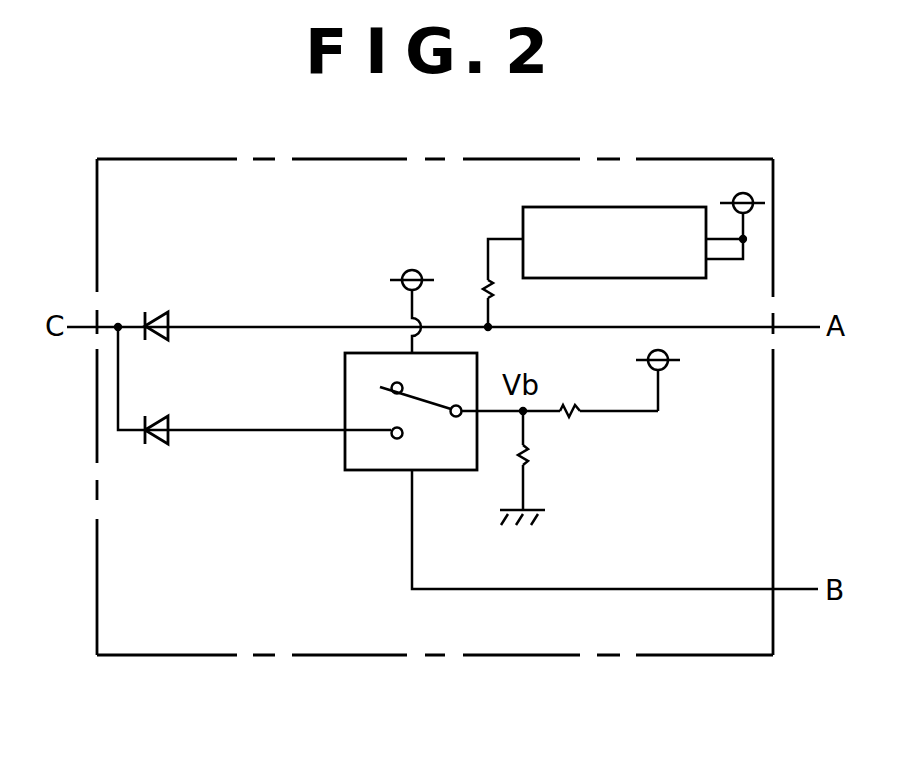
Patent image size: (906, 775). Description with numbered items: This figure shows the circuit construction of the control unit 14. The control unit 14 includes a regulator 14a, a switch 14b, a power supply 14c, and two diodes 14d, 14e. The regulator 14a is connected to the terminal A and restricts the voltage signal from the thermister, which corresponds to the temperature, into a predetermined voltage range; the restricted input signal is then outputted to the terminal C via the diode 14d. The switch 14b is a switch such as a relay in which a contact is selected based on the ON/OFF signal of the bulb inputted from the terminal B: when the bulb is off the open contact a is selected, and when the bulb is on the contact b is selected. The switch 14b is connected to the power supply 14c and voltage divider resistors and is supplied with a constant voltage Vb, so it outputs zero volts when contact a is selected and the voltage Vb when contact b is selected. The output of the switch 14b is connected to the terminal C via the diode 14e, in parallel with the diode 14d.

The control unit 14 is at (680, 159).
The regulator 14a is at (537, 207).
The switch 14b is at (362, 470).
The power supply 14c is at (668, 365).
The diode 14d is at (170, 312).
The diode 14e is at (170, 424).